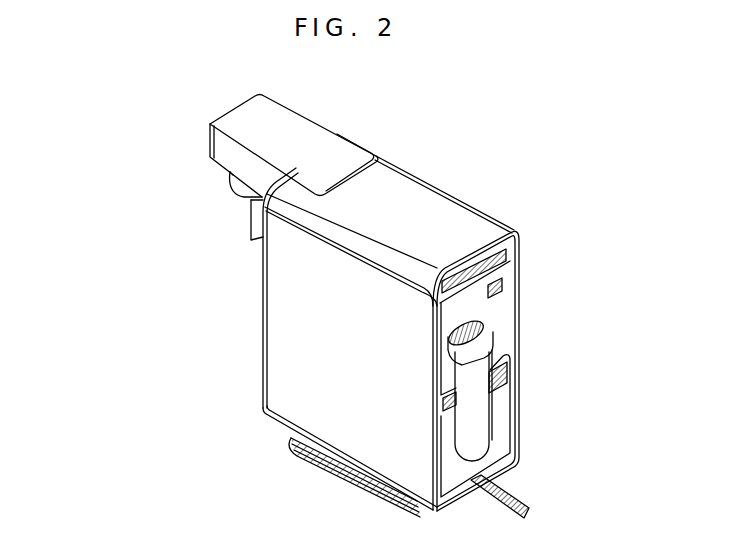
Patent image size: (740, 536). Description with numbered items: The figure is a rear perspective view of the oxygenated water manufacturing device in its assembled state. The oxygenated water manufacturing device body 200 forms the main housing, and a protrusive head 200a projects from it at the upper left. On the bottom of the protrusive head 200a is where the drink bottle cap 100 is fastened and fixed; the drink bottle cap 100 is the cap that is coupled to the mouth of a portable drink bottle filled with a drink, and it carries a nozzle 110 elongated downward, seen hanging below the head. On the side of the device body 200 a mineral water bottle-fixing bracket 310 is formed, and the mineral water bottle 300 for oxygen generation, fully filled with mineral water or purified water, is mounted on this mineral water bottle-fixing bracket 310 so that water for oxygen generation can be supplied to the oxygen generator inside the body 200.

The oxygenated water manufacturing device body 200 is at (458, 190).
The protrusive head 200a is at (208, 124).
The drink bottle cap 100 is at (236, 181).
The nozzle 110 is at (252, 220).
The mineral water bottle 300 is at (467, 405).
The mineral water bottle-fixing bracket 310 is at (493, 338).